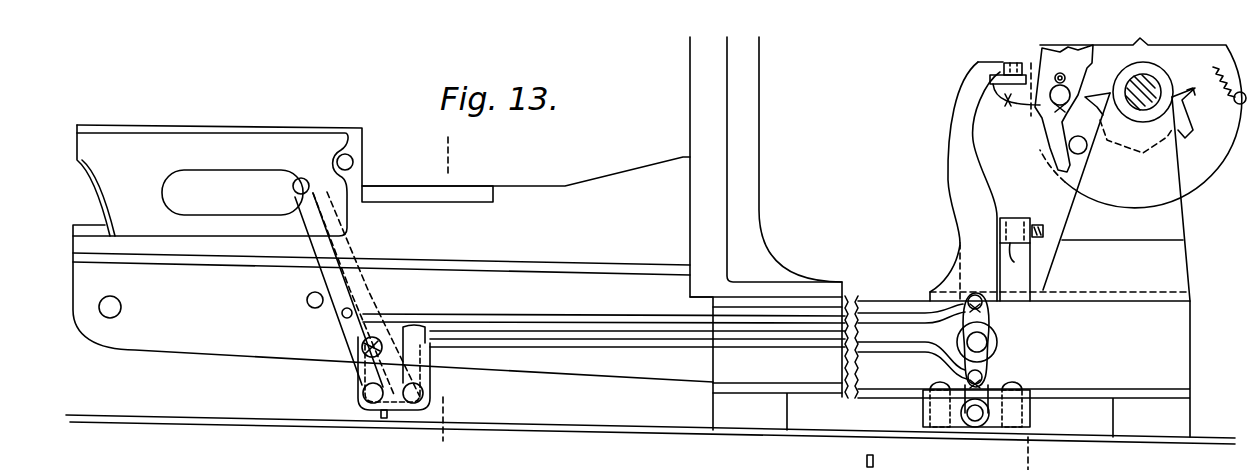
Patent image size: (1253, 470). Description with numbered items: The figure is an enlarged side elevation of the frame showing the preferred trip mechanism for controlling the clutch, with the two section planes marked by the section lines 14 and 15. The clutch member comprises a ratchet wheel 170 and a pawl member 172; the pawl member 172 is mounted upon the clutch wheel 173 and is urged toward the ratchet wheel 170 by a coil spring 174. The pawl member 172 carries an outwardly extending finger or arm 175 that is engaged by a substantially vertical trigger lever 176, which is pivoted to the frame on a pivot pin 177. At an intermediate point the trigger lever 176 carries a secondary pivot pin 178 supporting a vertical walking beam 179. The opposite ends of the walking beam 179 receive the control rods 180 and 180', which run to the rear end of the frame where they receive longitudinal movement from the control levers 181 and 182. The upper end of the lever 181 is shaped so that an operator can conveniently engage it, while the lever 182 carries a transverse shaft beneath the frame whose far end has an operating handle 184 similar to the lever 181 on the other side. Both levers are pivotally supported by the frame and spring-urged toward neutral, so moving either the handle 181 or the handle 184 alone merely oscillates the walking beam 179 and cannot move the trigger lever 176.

The section line 14- 14 is at (428, 137).
The section line 15- 15 is at (1008, 41).
The ratchet wheel 170 is at (1188, 92).
The pawl member 172 is at (1047, 108).
The clutch wheel 173 is at (1218, 165).
The coil spring 174 is at (1216, 72).
The finger or arm 175 is at (1008, 90).
The trigger finger or lever 176 is at (960, 110).
The pivot pin 177 is at (961, 414).
The secondary pivot pin 178 is at (982, 342).
The walking beam 179 is at (983, 320).
The control rod 180 is at (637, 367).
The control rod 180' is at (604, 359).
The control lever 181 is at (352, 340).
The control lever 182 is at (418, 370).
The operating handle 184 is at (368, 292).